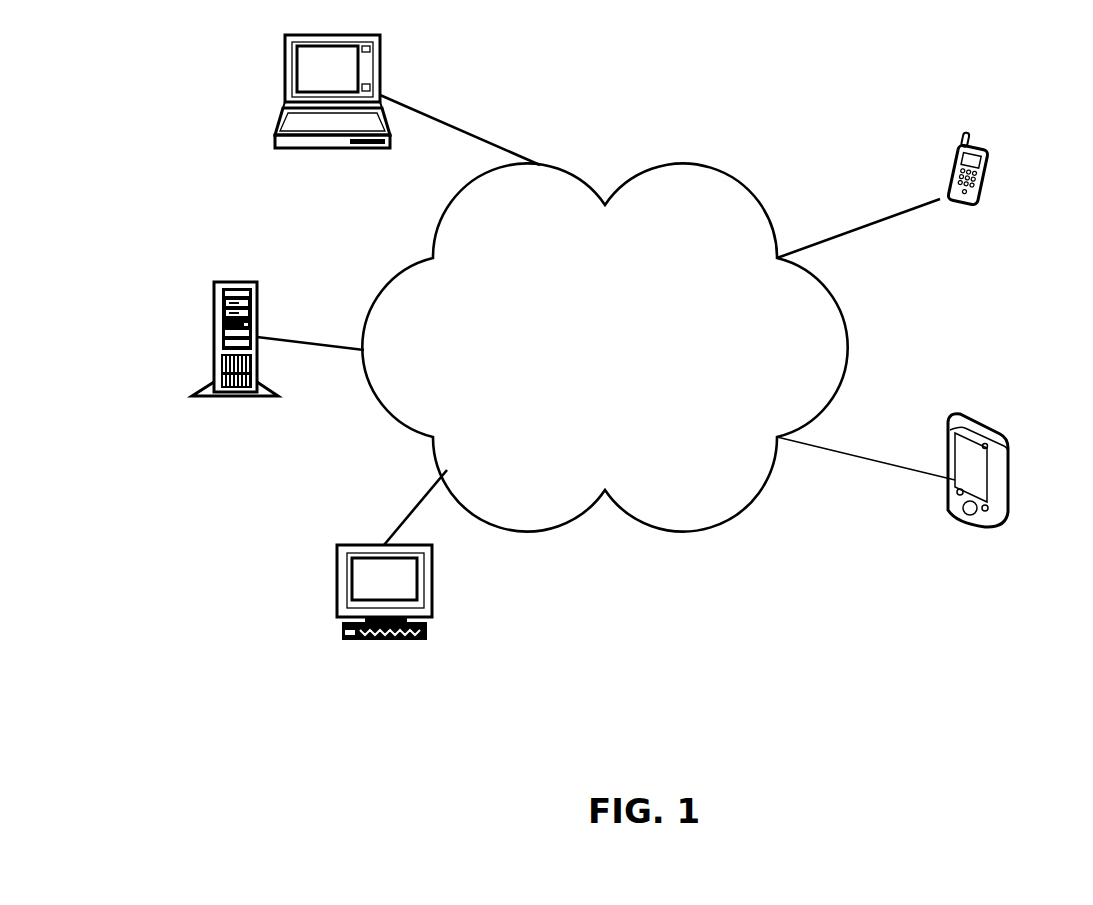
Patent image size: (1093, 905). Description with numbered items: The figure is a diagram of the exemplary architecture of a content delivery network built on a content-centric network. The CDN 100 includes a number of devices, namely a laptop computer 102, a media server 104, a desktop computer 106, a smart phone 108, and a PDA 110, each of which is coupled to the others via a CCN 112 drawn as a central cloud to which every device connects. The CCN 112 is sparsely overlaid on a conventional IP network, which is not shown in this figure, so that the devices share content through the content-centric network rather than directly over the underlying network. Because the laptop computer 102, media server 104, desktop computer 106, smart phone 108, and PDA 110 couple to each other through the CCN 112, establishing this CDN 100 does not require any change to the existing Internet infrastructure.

The CDN 100 is at (642, 747).
The laptop computer 102 is at (283, 90).
The media server 104 is at (213, 283).
The desktop computer 106 is at (337, 590).
The smart phone 108 is at (992, 188).
The PDA 110 is at (1005, 468).
The CCN 112 is at (606, 320).